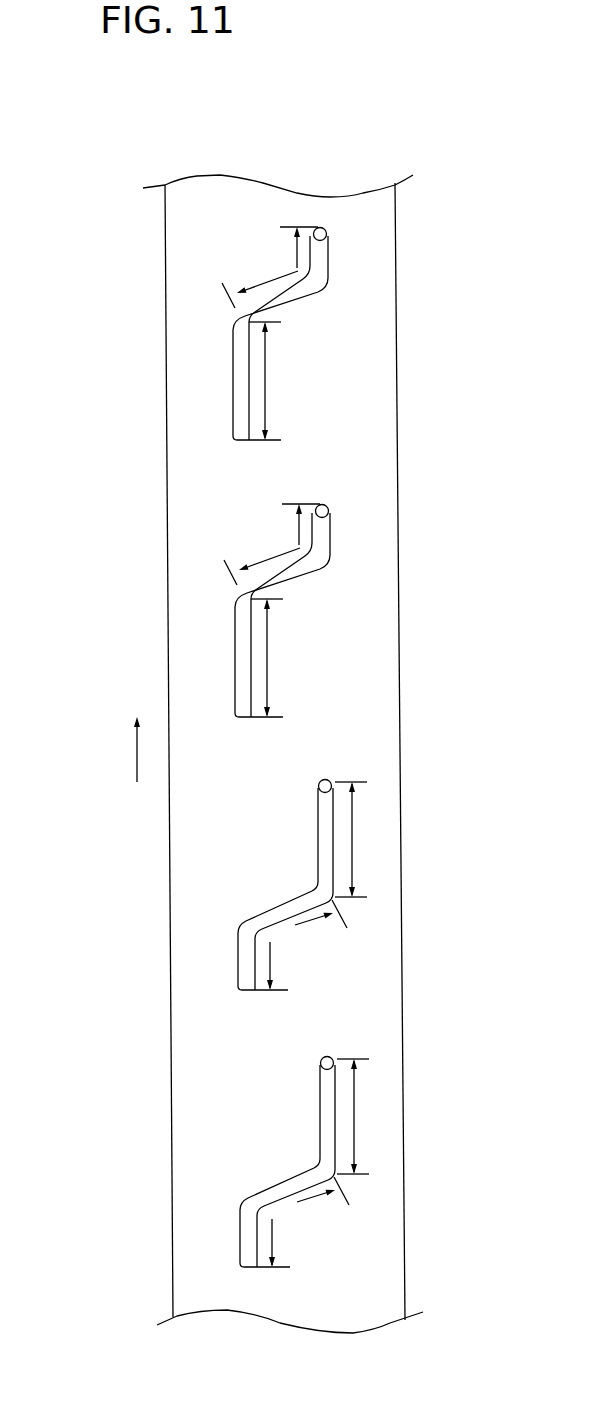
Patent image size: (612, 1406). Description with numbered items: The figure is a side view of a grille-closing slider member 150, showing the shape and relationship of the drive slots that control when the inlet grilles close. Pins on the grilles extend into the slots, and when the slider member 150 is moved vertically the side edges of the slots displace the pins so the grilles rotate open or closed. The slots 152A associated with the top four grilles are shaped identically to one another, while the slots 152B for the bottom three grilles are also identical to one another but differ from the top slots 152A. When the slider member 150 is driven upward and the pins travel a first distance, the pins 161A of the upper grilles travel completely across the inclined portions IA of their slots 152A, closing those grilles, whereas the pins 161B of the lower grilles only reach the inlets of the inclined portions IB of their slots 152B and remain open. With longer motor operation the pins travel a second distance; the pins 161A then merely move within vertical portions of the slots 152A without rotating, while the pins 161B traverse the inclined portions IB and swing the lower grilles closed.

The slider member 150 is at (400, 573).
The pin of upper grille 161A is at (326, 230).
The inclined portion of slot IA is at (298, 292).
The slot for upper grille 152A is at (237, 372).
The pin of lower grille 161B is at (318, 789).
The inclined portion of slot IB is at (285, 912).
The slot for lower grille 152B is at (245, 968).